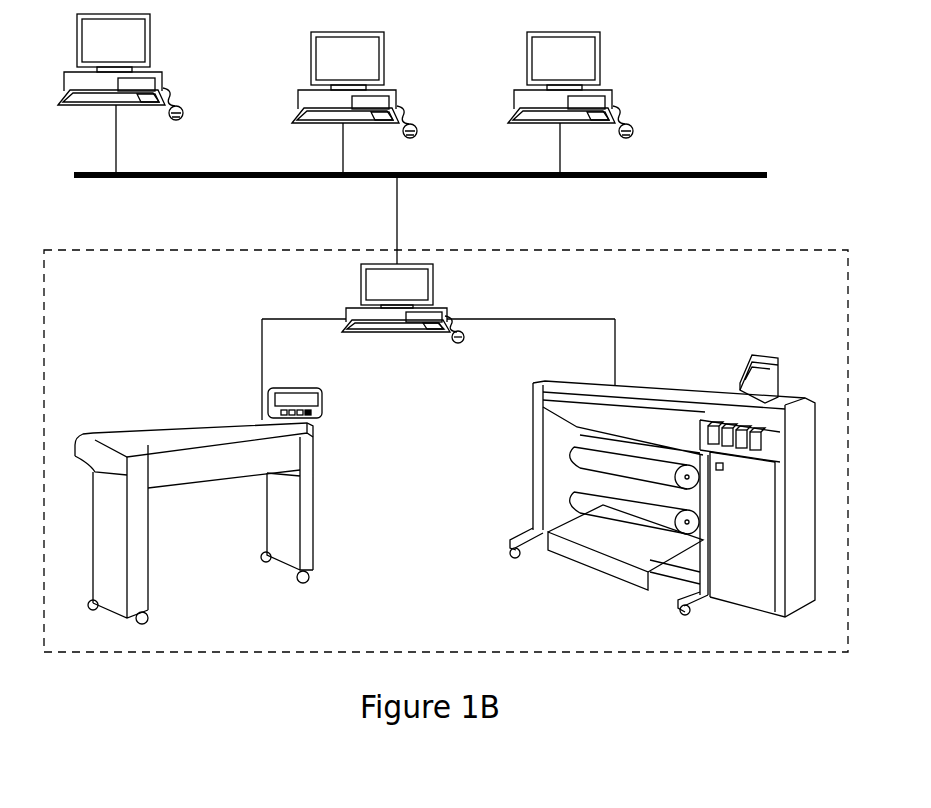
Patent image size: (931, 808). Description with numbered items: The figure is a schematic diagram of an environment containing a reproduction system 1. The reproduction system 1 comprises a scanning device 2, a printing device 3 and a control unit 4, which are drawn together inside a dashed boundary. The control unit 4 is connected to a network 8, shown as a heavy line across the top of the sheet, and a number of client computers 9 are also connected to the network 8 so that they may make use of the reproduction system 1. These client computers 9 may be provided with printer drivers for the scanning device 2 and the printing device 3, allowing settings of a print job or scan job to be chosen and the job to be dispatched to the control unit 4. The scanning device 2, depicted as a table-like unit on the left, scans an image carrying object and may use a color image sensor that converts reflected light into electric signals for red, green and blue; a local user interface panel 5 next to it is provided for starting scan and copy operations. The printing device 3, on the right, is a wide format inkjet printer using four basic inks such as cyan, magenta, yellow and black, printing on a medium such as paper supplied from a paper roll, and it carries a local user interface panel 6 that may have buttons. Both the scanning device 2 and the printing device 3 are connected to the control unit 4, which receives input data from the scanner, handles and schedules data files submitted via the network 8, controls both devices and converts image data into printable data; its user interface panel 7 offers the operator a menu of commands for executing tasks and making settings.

The reproduction system 1 is at (60, 250).
The scanning device 2 is at (175, 425).
The printing device 3 is at (803, 425).
The control unit 4 is at (447, 312).
The local user interface panel 5 is at (322, 404).
The local user interface panel 6 is at (752, 362).
The user interface panel 7 is at (362, 283).
The network 8 is at (765, 178).
The client computers 9 is at (81, 58).